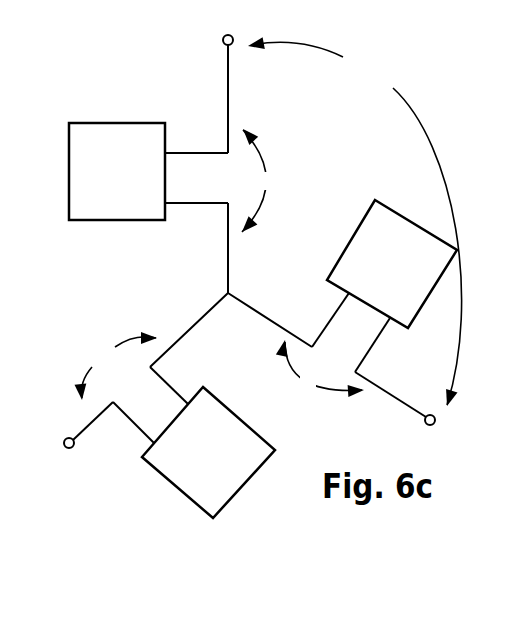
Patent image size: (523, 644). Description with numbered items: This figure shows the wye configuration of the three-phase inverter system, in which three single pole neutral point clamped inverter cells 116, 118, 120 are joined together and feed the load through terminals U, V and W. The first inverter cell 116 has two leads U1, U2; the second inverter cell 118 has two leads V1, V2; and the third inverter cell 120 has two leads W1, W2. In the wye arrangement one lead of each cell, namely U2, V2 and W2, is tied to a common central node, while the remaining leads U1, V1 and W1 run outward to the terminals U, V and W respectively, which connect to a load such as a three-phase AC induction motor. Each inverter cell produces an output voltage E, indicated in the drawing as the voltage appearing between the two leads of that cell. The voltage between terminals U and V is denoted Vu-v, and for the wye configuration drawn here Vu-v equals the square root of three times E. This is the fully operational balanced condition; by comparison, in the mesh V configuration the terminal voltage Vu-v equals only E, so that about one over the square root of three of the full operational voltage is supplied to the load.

The single pole neutral point clamped inverter cell 116 is at (110, 138).
The single pole neutral point clamped inverter cell 118 is at (367, 265).
The single pole neutral point clamped inverter cell 120 is at (205, 479).
The terminal U is at (231, 27).
The terminal V is at (405, 407).
The terminal W is at (79, 434).
The lead U1 is at (196, 147).
The lead U2 is at (196, 213).
The lead V1 is at (372, 347).
The lead V2 is at (323, 320).
The lead W1 is at (125, 422).
The lead W2 is at (169, 372).
The voltage between terminals U and V Vu-v is at (355, 221).
The output voltage of a single phase inverter cell E is at (220, 264).